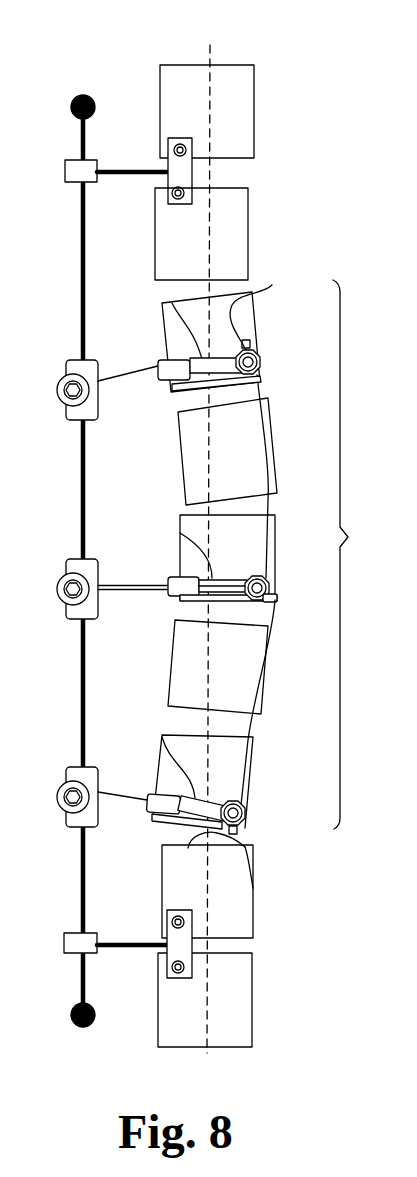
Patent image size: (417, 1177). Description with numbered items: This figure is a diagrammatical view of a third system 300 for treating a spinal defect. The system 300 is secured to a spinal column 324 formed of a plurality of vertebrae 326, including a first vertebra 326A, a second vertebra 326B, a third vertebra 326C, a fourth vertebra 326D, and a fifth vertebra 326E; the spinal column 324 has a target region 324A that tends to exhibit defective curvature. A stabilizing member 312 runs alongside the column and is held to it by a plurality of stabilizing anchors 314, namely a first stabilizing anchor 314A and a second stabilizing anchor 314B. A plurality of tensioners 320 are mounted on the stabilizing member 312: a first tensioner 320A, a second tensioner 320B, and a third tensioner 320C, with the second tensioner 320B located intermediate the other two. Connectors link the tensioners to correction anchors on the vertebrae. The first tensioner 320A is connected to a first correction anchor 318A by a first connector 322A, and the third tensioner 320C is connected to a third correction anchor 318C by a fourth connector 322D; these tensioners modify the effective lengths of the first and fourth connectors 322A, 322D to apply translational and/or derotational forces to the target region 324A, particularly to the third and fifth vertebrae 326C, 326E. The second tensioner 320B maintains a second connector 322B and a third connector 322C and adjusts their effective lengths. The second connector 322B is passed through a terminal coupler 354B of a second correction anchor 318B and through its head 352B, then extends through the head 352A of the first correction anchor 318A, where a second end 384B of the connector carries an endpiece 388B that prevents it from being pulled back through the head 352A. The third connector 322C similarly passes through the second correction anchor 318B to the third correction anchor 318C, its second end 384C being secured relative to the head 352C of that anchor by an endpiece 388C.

The third system 300 is at (126, 58).
The stabilizing member 312 is at (80, 245).
The stabilizing anchors 314 is at (50, 160).
The first stabilizing anchor 314A is at (127, 950).
The second stabilizing anchor 314B is at (132, 170).
The first correction anchor 318A is at (162, 737).
The second correction anchor 318B is at (180, 533).
The third correction anchor 318C is at (170, 303).
The tensioners 320 is at (53, 362).
The first tensioner 320A is at (93, 780).
The second tensioner 320B is at (93, 566).
The third tensioner 320C is at (92, 370).
The first connector 322A is at (120, 803).
The second connector 322B is at (123, 593).
The third connector 322C is at (258, 387).
The fourth connector 322D is at (130, 380).
The spinal column 324 is at (270, 52).
The target region 324A is at (370, 554).
The vertebrae 326 is at (263, 111).
The first vertebra 326A is at (255, 922).
The second vertebra 326B is at (232, 221).
The third vertebra 326C is at (247, 770).
The fourth vertebra 326D is at (273, 537).
The fifth vertebra 326E is at (258, 298).
The head of first correction anchor 352A is at (247, 820).
The head of second correction anchor 352B is at (303, 572).
The head of third correction anchor 352C is at (262, 365).
The terminal coupler 354B is at (170, 602).
The second end of second connector 384B is at (253, 888).
The second end of third connector 384C is at (253, 302).
The endpiece 388B is at (192, 845).
The endpiece 388C is at (253, 342).